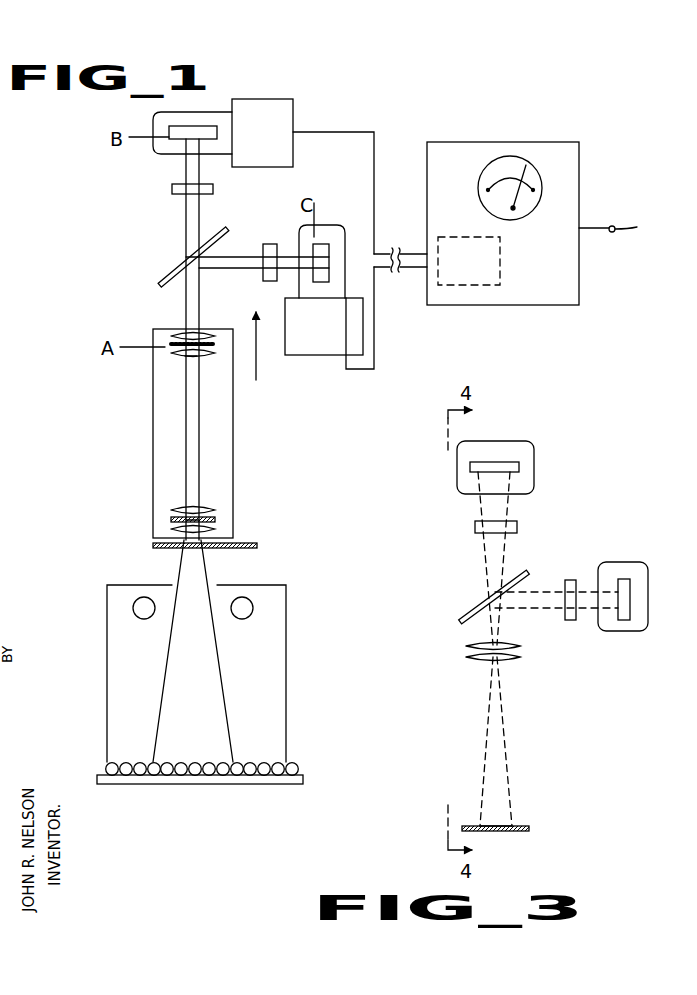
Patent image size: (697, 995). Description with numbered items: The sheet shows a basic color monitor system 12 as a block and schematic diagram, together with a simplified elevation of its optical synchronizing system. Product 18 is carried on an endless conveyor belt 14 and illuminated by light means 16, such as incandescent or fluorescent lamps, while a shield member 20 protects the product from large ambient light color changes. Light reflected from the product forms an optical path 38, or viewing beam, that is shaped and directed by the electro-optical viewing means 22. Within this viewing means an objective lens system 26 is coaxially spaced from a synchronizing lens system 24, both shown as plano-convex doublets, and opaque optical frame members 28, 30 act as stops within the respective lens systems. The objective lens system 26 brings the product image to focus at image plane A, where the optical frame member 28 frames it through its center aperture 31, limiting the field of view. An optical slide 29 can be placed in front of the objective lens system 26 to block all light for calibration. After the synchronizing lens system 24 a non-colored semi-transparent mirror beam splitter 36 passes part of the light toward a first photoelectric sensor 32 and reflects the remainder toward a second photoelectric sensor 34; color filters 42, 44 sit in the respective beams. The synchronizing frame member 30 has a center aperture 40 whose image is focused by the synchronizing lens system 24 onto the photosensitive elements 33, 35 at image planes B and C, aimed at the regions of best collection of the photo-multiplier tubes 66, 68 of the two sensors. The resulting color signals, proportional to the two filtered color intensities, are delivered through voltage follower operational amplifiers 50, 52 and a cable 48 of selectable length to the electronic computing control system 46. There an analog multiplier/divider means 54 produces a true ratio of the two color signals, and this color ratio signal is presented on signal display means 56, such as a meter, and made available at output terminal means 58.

In FIG. 1, the color monitor system 12 is at (298, 430).
In FIG. 1, the endless conveyor belt 14 is at (235, 785).
In FIG. 1, the light means 16 is at (133, 608).
In FIG. 1, the product 18 is at (205, 766).
In FIG. 1, the shield member 20 is at (286, 657).
In FIG. 1, the electro-optical viewing means 22 is at (241, 345).
In FIG. 1, the synchronizing lens system 24 is at (160, 333).
In FIG. 3, the synchronizing lens system 24 is at (516, 667).
In FIG. 1, the objective lens system 26 is at (160, 503).
In FIG. 1, the optical frame member 28 is at (172, 346).
In FIG. 1, the optical slide 29 is at (242, 548).
In FIG. 1, the synchronizing optical frame member 30 is at (172, 520).
In FIG. 3, the synchronizing optical frame member 30 is at (520, 826).
In FIG. 1, the center aperture 31 is at (190, 356).
In FIG. 1, the first photoelectric sensor 32 is at (170, 108).
In FIG. 3, the first photoelectric sensor 32 is at (545, 446).
In FIG. 1, the photosensitive element 33 is at (203, 129).
In FIG. 3, the photosensitive element 33 is at (500, 462).
In FIG. 1, the second photoelectric sensor 34 is at (356, 258).
In FIG. 3, the second photoelectric sensor 34 is at (626, 552).
In FIG. 1, the photosensitive element 35 is at (325, 270).
In FIG. 3, the photosensitive element 35 is at (625, 602).
In FIG. 1, the beam splitter 36 is at (168, 276).
In FIG. 3, the beam splitter 36 is at (470, 605).
In FIG. 1, the optical path 38 is at (188, 459).
In FIG. 1, the center aperture 40 is at (195, 520).
In FIG. 3, the center aperture 40 is at (490, 826).
In FIG. 1, the color filter 42 is at (172, 188).
In FIG. 3, the color filter 42 is at (517, 527).
In FIG. 1, the color filter 44 is at (270, 244).
In FIG. 3, the color filter 44 is at (571, 580).
In FIG. 1, the electronic computing control system 46 is at (488, 311).
In FIG. 1, the cable 48 is at (393, 243).
In FIG. 1, the operational amplifier 50 is at (299, 152).
In FIG. 1, the operational amplifier 52 is at (316, 362).
In FIG. 1, the analog multiplier/divider means 54 is at (500, 258).
In FIG. 1, the signal display means 56 is at (530, 148).
In FIG. 1, the output terminal means 58 is at (621, 228).
In FIG. 3, the photo-multiplier tube 66 is at (534, 480).
In FIG. 3, the photomultiplier tube 68 is at (640, 562).